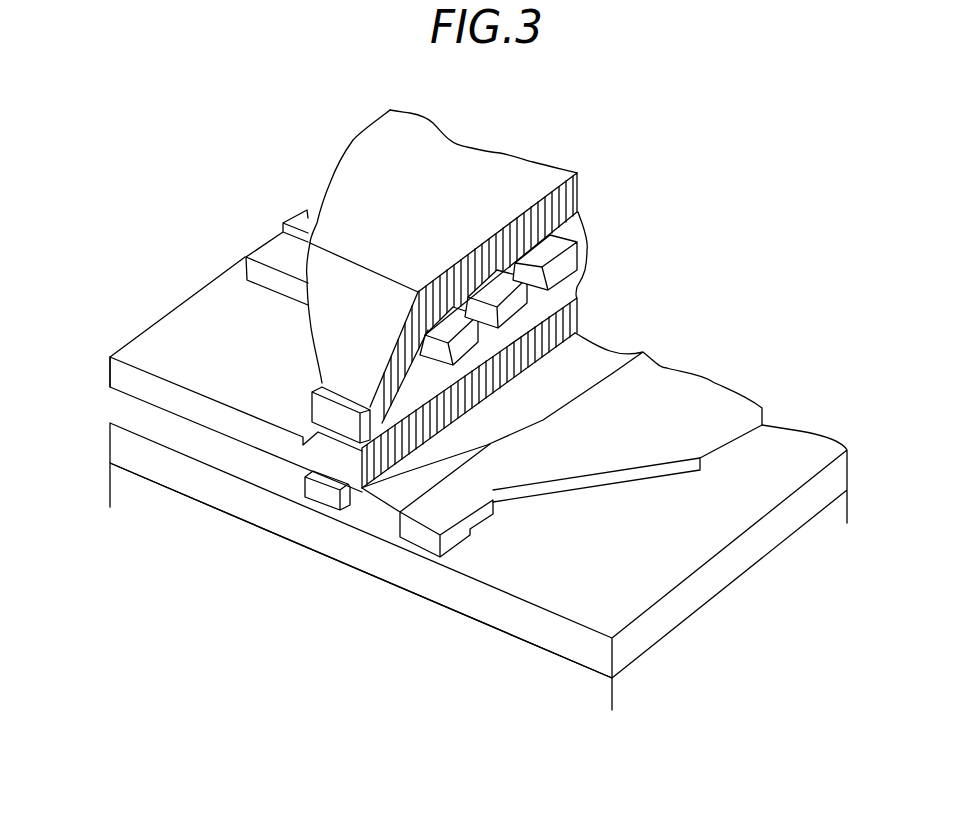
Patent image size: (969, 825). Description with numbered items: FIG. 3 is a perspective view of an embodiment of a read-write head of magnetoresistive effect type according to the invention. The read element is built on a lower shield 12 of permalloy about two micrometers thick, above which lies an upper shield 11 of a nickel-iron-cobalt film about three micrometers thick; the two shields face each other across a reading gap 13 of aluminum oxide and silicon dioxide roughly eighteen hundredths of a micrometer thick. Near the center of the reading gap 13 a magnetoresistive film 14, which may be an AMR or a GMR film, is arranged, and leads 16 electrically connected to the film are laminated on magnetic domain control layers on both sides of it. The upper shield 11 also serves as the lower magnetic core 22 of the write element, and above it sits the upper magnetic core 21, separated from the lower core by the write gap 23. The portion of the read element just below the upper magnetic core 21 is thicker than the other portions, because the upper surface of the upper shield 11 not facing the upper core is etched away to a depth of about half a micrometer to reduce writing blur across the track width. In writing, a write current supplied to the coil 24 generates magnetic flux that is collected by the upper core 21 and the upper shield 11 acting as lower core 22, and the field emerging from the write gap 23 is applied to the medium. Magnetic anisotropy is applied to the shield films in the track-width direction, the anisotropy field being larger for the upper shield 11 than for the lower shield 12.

The upper shield 11 is at (177, 355).
The lower shield 12 is at (207, 477).
The reading gap 13 is at (267, 463).
The magnetoresistive film 14 is at (372, 497).
The leads 16 is at (675, 412).
The upper magnetic core 21 is at (512, 182).
The lower magnetic core 22 is at (172, 342).
The write gap 23 is at (313, 447).
The coil 24 is at (277, 253).